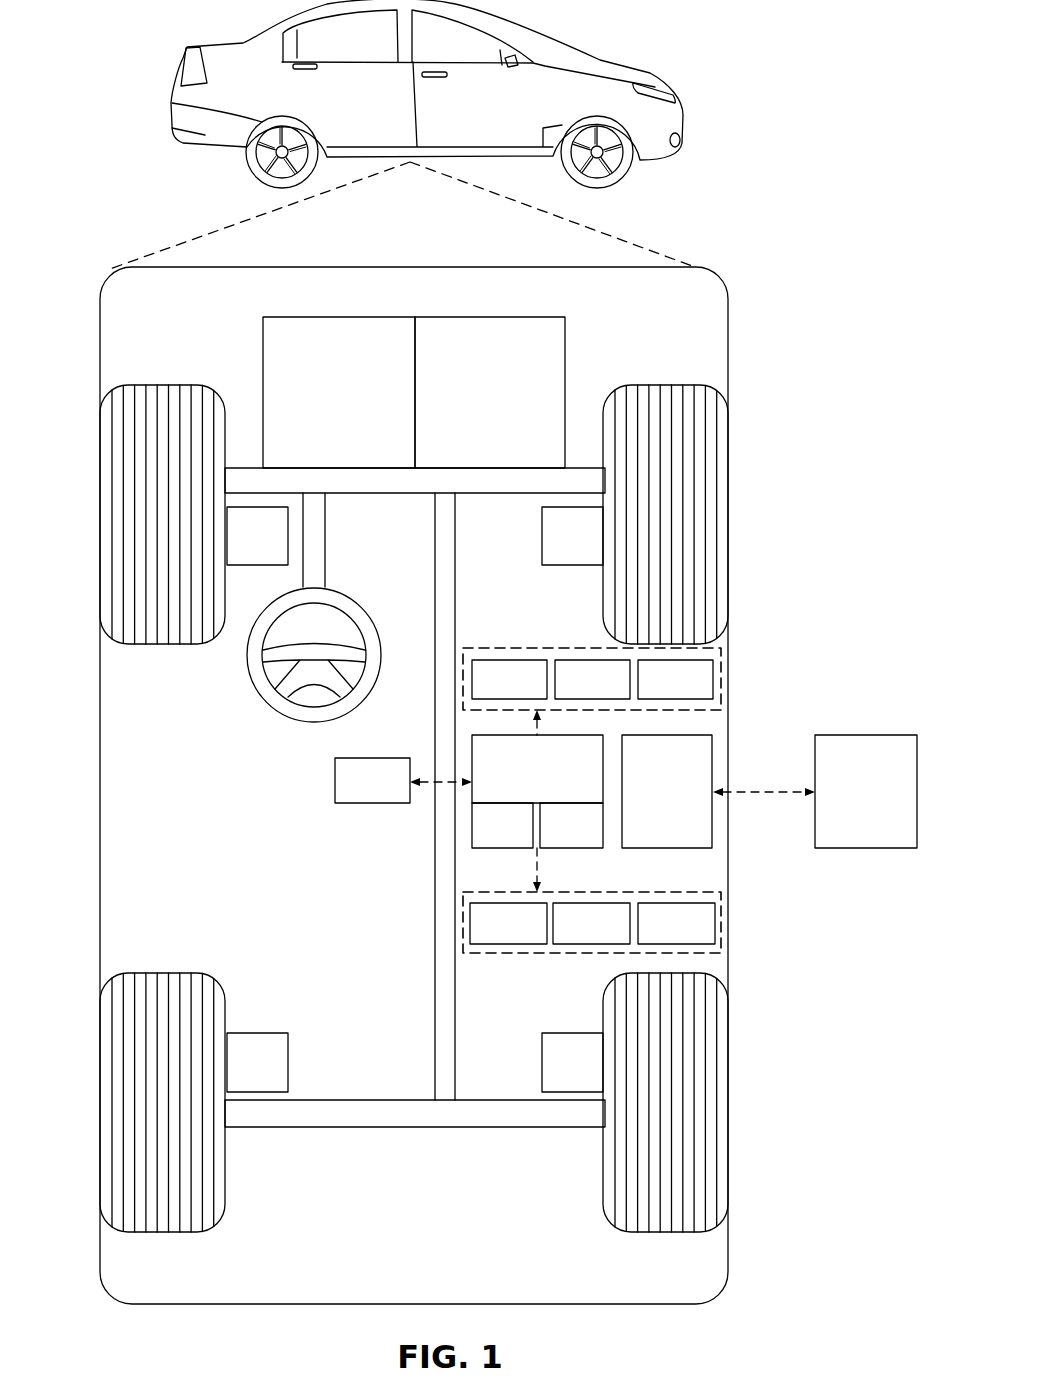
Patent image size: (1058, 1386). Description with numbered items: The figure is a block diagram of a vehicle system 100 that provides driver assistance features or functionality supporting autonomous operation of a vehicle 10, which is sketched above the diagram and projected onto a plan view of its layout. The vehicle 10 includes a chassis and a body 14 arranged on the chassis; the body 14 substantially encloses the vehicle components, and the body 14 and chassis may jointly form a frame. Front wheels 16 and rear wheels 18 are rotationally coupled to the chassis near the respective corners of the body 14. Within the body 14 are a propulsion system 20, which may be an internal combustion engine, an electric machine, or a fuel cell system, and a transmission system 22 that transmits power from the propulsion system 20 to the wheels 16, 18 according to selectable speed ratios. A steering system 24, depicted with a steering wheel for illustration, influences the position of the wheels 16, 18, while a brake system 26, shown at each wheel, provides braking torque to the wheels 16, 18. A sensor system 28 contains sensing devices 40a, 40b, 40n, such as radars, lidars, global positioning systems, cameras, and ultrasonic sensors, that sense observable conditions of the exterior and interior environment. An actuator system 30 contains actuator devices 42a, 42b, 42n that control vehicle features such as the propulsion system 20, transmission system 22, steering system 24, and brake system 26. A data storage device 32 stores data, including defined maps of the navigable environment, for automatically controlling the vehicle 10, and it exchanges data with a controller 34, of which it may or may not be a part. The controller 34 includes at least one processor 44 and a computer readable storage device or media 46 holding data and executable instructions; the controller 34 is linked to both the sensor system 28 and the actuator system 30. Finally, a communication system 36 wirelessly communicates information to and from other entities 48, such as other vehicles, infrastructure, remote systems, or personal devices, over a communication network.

The vehicle 10 is at (182, 72).
The vehicle system 100 is at (752, 288).
The body 14 is at (100, 747).
The front wheels 16 is at (162, 385).
The rear wheels 18 is at (163, 1233).
The propulsion system 20 is at (322, 406).
The transmission system 22 is at (473, 406).
The steering system 24 is at (333, 549).
The brake system 26 is at (240, 551).
The sensor system 28 is at (552, 647).
The actuator system 30 is at (555, 955).
The data storage device 32 is at (355, 796).
The controller 34 is at (520, 785).
The communication system 36 is at (650, 807).
The sensing device 40a is at (534, 695).
The sensing device 40b is at (617, 695).
The sensing device 40n is at (700, 695).
The actuator device 42a is at (533, 939).
The actuator device 42b is at (616, 939).
The actuator device 42n is at (701, 939).
The processor 44 is at (485, 841).
The computer readable storage device or media 46 is at (554, 841).
The other entities 48 is at (849, 807).